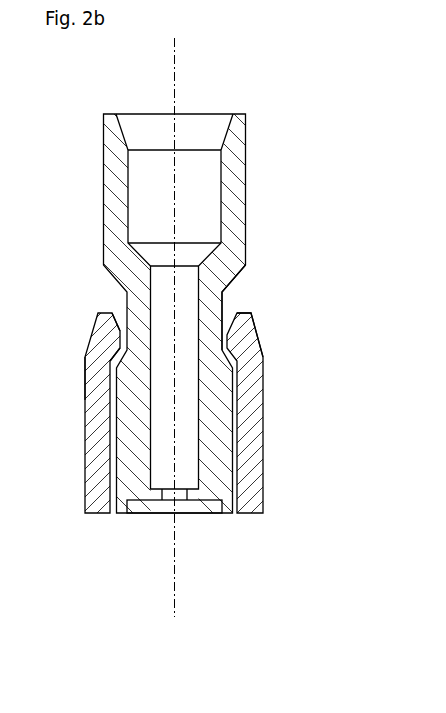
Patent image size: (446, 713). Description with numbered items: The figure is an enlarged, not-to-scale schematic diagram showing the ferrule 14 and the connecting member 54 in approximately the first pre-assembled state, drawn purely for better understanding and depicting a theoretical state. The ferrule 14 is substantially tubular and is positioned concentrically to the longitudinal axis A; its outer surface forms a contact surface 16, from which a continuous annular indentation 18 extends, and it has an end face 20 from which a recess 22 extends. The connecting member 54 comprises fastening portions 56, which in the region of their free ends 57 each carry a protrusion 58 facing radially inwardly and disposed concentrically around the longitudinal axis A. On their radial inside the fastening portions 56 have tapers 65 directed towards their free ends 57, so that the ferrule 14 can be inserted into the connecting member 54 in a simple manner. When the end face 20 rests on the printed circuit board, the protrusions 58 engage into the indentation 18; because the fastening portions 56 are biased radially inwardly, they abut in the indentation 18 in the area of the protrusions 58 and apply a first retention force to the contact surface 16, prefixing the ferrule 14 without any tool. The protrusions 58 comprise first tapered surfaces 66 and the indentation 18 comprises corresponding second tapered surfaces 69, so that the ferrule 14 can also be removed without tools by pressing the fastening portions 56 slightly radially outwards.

The ferrule 14 is at (223, 310).
The contact surface 16 is at (245, 214).
The annular indentation 18 is at (228, 304).
The end face 20 is at (225, 513).
The recess 22 is at (152, 515).
The connecting member 54 is at (223, 348).
The fastening portion 56 is at (256, 421).
The free end 57 is at (102, 311).
The protrusion 58 is at (245, 336).
The taper 65 is at (108, 326).
The first tapered surface 66 is at (113, 353).
The second tapered surface 69 is at (96, 375).
The longitudinal axis A is at (176, 55).